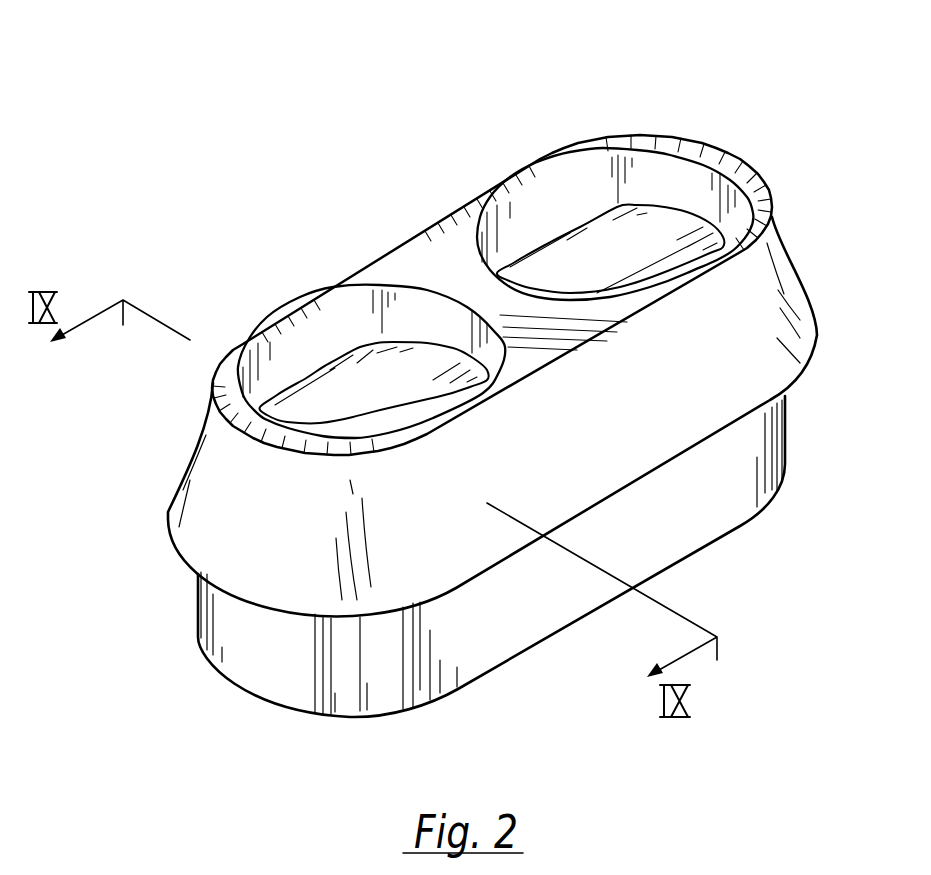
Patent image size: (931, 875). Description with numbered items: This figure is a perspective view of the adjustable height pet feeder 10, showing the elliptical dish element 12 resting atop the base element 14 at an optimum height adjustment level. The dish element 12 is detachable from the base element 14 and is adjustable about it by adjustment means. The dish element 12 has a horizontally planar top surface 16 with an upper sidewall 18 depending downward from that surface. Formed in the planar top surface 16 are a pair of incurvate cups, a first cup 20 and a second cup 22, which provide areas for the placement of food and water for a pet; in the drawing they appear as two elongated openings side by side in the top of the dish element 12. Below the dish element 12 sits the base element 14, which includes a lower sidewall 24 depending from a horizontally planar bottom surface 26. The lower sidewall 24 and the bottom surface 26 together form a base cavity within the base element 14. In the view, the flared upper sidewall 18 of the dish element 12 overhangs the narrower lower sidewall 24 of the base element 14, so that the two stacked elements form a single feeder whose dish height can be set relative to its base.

The adjustable height pet feeder 10 is at (758, 95).
The dish element 12 is at (203, 433).
The base element 14 is at (155, 596).
The top surface 16 is at (423, 247).
The upper sidewall 18 is at (800, 297).
The first cup 20 is at (325, 367).
The second cup 22 is at (580, 227).
The lower sidewall 24 is at (788, 455).
The bottom surface 26 is at (483, 677).